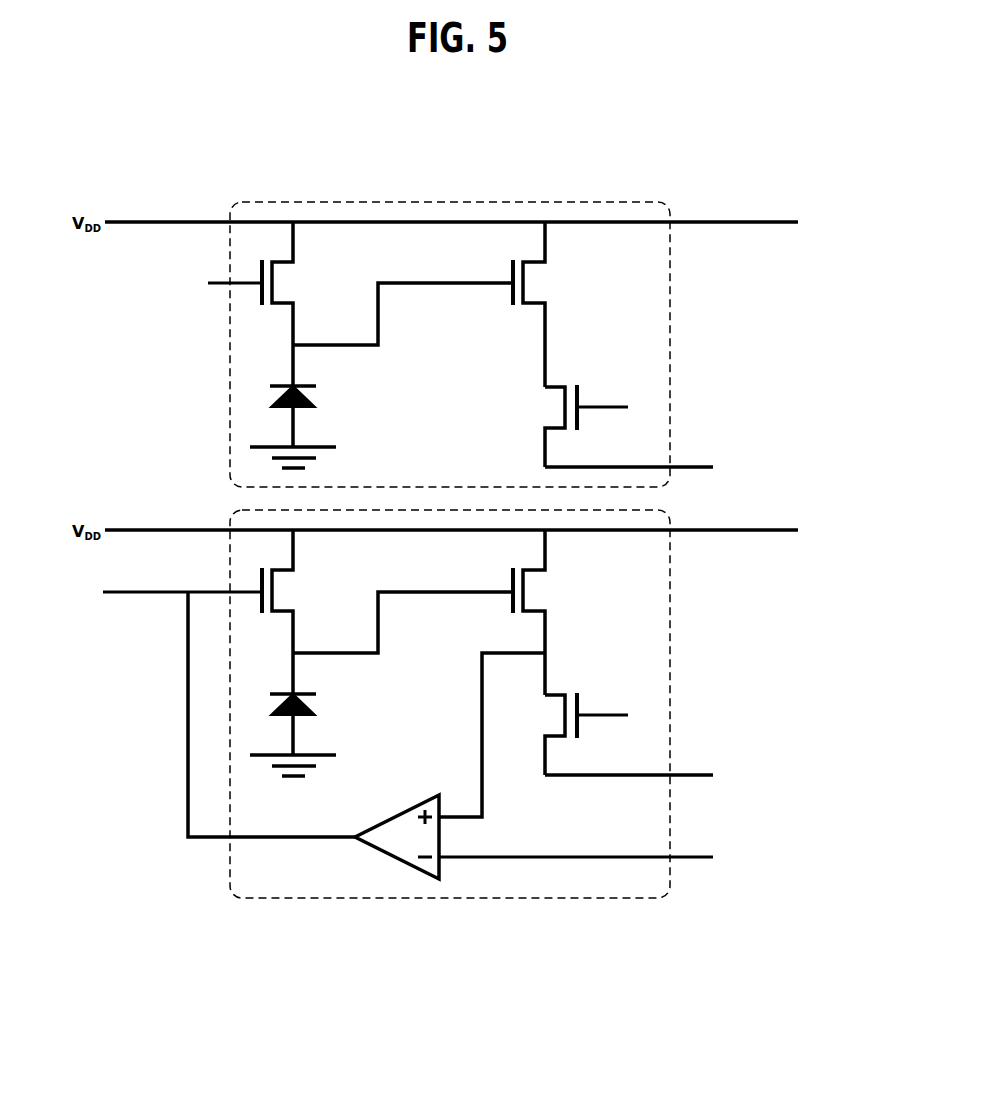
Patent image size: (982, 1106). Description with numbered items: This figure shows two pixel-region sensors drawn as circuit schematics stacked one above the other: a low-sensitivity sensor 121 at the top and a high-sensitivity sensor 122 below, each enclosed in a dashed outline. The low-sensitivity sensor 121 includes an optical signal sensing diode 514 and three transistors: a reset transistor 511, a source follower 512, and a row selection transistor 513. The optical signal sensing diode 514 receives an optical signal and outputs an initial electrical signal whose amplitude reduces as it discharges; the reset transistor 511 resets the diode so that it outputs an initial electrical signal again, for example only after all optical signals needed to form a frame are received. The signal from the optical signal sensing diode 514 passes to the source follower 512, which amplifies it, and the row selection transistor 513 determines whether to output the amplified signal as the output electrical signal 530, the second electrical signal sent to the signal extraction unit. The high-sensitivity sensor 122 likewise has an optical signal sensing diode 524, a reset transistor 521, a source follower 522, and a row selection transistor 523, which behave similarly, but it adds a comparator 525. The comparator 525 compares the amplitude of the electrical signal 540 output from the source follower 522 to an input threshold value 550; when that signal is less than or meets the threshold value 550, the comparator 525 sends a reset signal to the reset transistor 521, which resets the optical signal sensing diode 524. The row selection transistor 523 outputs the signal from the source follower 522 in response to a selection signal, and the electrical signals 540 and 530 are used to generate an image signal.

The low-sensitivity sensor 121 is at (445, 160).
The high-sensitivity sensor 122 is at (448, 932).
The reset transistor 511 is at (322, 273).
The source follower 512 is at (574, 273).
The row selection transistor 513 is at (575, 373).
The optical signal sensing diode 514 is at (316, 393).
The reset transistor 521 is at (322, 581).
The source follower 522 is at (574, 581).
The row selection transistor 523 is at (575, 681).
The optical signal sensing diode 524 is at (316, 701).
The comparator 525 is at (392, 808).
The output electrical signal 530 is at (755, 470).
The electrical signal 540 is at (755, 778).
The threshold value 550 is at (755, 860).